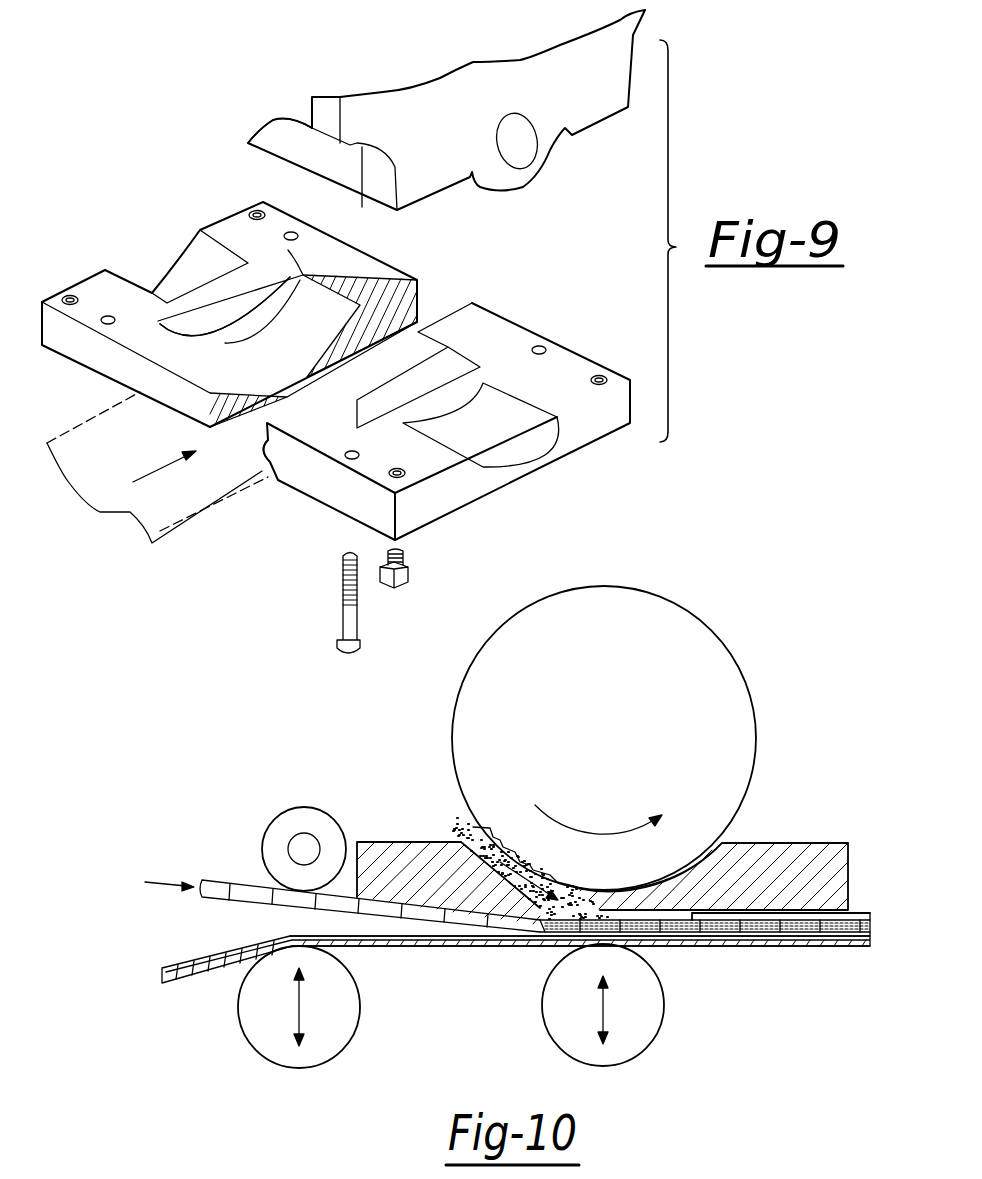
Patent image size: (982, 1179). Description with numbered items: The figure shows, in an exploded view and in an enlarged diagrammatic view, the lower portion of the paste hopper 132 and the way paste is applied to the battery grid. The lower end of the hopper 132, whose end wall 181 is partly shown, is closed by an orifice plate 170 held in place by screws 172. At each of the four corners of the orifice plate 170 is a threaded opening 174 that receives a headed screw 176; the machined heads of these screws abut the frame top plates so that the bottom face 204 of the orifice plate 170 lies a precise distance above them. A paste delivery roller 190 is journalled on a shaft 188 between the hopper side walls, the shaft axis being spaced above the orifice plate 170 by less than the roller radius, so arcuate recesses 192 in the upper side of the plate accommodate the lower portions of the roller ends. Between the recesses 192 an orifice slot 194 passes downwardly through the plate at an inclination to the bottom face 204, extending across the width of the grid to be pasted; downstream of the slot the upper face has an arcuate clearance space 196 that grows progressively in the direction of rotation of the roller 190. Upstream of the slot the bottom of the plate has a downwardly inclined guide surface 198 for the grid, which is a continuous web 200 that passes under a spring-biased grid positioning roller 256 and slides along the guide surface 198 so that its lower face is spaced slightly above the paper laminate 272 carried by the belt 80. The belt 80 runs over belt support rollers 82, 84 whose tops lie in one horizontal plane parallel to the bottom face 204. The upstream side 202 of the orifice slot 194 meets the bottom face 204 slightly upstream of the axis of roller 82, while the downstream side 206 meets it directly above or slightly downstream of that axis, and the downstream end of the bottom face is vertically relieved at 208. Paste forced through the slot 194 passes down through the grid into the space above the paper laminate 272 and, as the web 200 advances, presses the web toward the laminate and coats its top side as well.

In FIG. 9, the hopper 132 is at (472, 64).
In FIG. 9, the end wall 181 is at (281, 133).
In FIG. 9, the shaft 188 is at (523, 127).
In FIG. 9, the threaded opening 174 is at (257, 212).
In FIG. 9, the arcuate recess 192 is at (283, 283).
In FIG. 9, the orifice plate 170 is at (508, 332).
In FIG. 10, the orifice plate 170 is at (797, 848).
In FIG. 9, the orifice slot 194 is at (300, 383).
In FIG. 10, the orifice slot 194 is at (520, 868).
In FIG. 9, the web 200 is at (128, 512).
In FIG. 10, the web 200 is at (217, 885).
In FIG. 9, the screw 172 is at (347, 615).
In FIG. 9, the headed screw 176 is at (402, 557).
In FIG. 10, the paste delivery roller 190 is at (737, 700).
In FIG. 10, the arcuate clearance space 196 is at (705, 850).
In FIG. 10, the guide surface 198 is at (420, 903).
In FIG. 10, the grid positioning roller 256 is at (316, 811).
In FIG. 10, the paper laminate 272 is at (197, 958).
In FIG. 10, the belt 80 is at (435, 947).
In FIG. 10, the belt support roller 84 is at (338, 1042).
In FIG. 10, the belt support roller 82 is at (645, 1040).
In FIG. 10, the upstream side of the orifice slot 202 is at (508, 940).
In FIG. 10, the bottom face of the orifice plate 204 is at (682, 918).
In FIG. 10, the downstream side of the orifice slot 206 is at (582, 908).
In FIG. 10, the relieved portion 208 is at (803, 913).